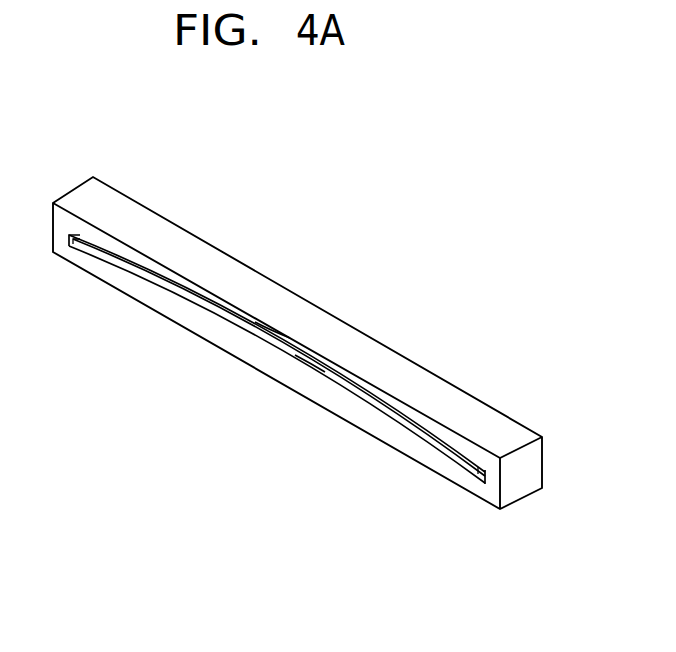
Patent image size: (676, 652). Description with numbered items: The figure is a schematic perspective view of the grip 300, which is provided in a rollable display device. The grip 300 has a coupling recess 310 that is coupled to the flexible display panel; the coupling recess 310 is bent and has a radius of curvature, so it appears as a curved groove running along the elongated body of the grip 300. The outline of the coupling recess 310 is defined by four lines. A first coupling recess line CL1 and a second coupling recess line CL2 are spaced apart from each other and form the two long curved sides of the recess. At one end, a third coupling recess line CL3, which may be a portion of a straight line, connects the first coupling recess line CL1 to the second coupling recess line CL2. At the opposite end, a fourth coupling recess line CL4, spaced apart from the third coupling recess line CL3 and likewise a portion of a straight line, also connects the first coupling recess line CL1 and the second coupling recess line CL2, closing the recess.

The grip 300 is at (473, 345).
The coupling recess 310 is at (347, 377).
The first coupling recess line CL1 is at (311, 364).
The second coupling recess line CL2 is at (275, 338).
The third coupling recess line CL3 is at (83, 250).
The fourth coupling recess line CL4 is at (484, 476).